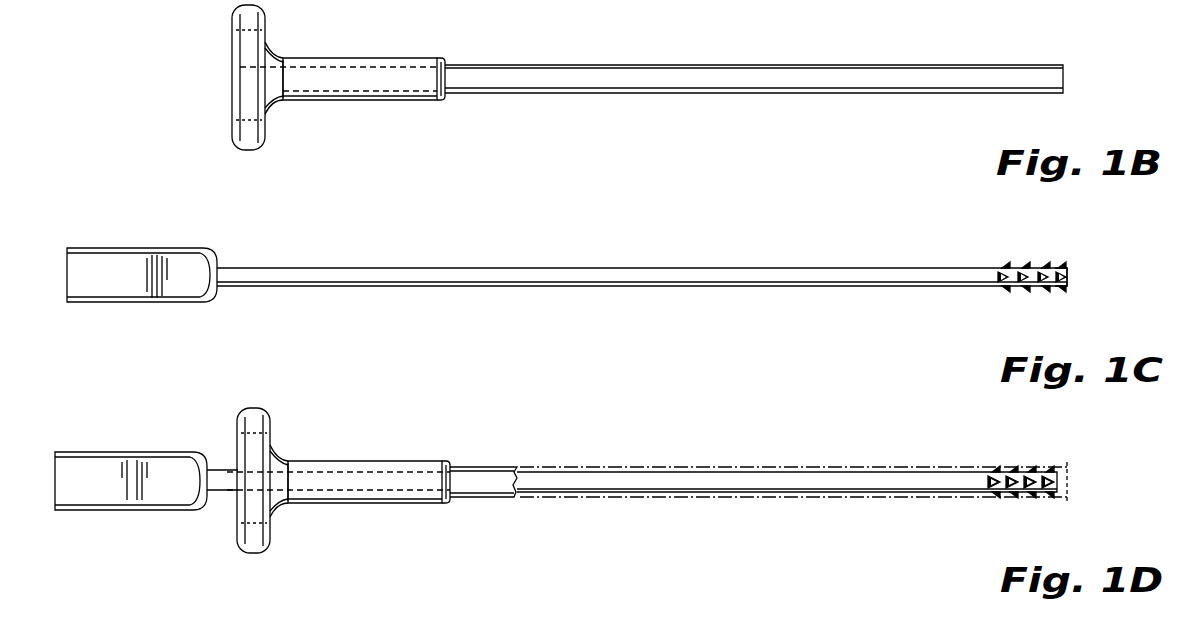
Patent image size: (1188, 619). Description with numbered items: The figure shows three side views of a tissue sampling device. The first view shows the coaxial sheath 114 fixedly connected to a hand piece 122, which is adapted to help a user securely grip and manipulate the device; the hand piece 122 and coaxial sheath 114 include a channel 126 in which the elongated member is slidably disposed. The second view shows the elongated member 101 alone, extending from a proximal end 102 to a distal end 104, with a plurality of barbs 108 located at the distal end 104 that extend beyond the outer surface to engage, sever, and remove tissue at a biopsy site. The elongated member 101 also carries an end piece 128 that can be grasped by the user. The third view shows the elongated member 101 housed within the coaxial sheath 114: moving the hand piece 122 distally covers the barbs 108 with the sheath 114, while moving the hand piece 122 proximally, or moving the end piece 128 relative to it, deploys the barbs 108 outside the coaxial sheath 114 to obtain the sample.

In FIG. 1C, the elongated member 101 is at (660, 268).
In FIG. 1D, the elongated member 101 is at (757, 473).
In FIG. 1C, the proximal end 102 is at (571, 271).
In FIG. 1C, the distal end 104 is at (1065, 259).
In FIG. 1C, the barbs 108 is at (1002, 266).
In FIG. 1D, the barbs 108 is at (995, 470).
In FIG. 1B, the coaxial sheath 114 is at (643, 66).
In FIG. 1D, the coaxial sheath 114 is at (500, 466).
In FIG. 1B, the hand piece 122 is at (337, 106).
In FIG. 1D, the hand piece 122 is at (338, 488).
In FIG. 1B, the channel 126 is at (410, 76).
In FIG. 1C, the distal end piece 128 is at (145, 246).
In FIG. 1D, the distal end piece 128 is at (145, 452).